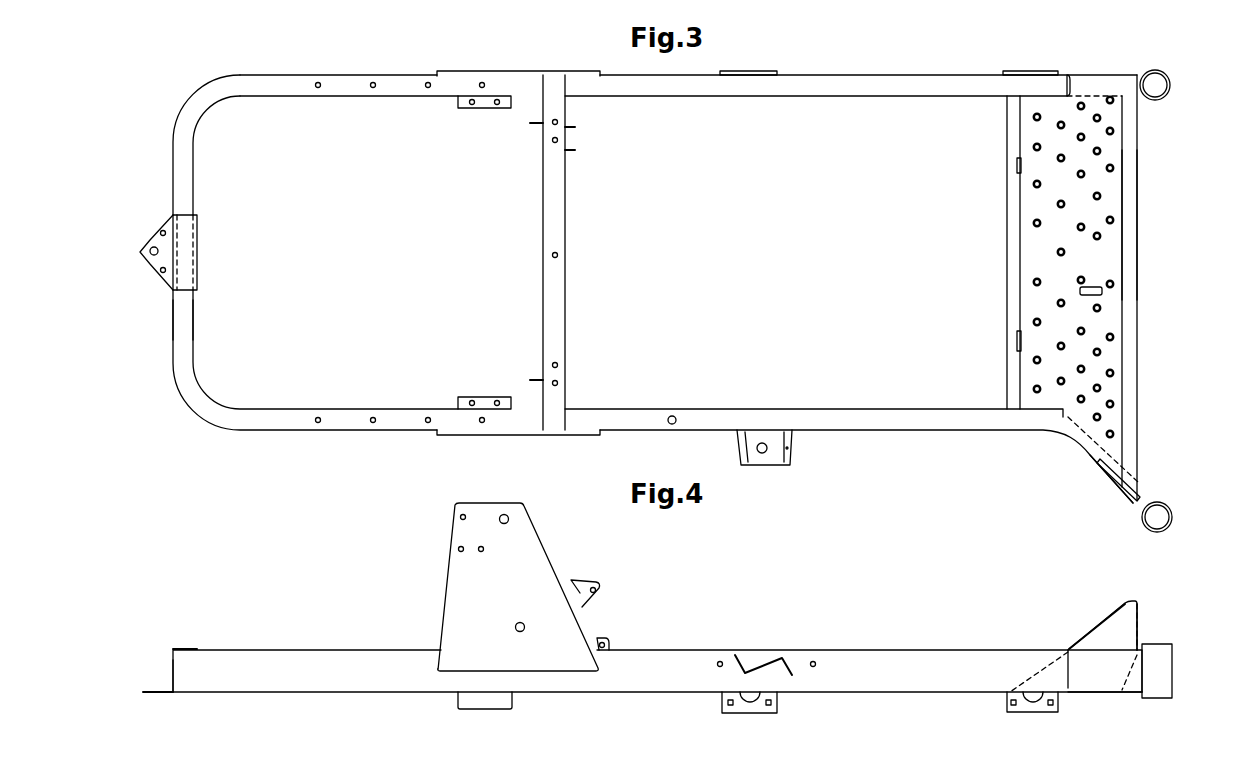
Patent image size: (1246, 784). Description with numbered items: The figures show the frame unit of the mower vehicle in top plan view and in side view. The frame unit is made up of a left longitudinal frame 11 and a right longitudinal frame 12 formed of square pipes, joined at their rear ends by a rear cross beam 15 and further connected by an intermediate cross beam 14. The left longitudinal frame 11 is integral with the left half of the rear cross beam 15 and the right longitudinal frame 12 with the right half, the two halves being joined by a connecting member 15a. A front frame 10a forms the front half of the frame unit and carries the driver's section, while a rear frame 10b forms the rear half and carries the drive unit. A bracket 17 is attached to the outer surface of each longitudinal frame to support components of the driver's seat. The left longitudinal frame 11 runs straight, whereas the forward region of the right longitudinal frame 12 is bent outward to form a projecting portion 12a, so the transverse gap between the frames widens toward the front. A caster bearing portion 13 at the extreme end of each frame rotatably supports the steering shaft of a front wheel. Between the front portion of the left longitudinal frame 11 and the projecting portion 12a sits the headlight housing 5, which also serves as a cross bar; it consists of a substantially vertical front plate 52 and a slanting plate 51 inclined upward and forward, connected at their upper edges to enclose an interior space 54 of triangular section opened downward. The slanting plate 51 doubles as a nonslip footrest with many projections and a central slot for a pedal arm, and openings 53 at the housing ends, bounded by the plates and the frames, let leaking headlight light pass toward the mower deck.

In FIG. 3, the headlight housing 5 is at (1142, 318).
In FIG. 4, the headlight housing 5 is at (1124, 600).
In FIG. 3, the front frame 10a is at (921, 72).
In FIG. 4, the front frame 10a is at (870, 648).
In FIG. 3, the rear frame 10b is at (275, 72).
In FIG. 4, the rear frame 10b is at (307, 648).
In FIG. 3, the left longitudinal frame 11 is at (347, 88).
In FIG. 3, the right longitudinal frame 12 is at (903, 410).
In FIG. 4, the right longitudinal frame 12 is at (665, 660).
In FIG. 3, the projecting portion 12a is at (1138, 492).
In FIG. 4, the projecting portion 12a is at (1108, 678).
In FIG. 3, the caster bearing portion 13 is at (1171, 88).
In FIG. 4, the caster bearing portion 13 is at (1172, 655).
In FIG. 3, the intermediate cross beam 14 is at (550, 292).
In FIG. 3, the rear cross beam 15 is at (190, 326).
In FIG. 4, the rear cross beam 15 is at (184, 680).
In FIG. 3, the connecting member 15a is at (195, 252).
In FIG. 4, the connecting member 15a is at (187, 648).
In FIG. 3, the bracket 17 is at (498, 70).
In FIG. 4, the bracket 17 is at (545, 543).
In FIG. 3, the slanting plate 51 is at (1035, 253).
In FIG. 4, the slanting plate 51 is at (1090, 628).
In FIG. 3, the front plate 52 is at (1140, 248).
In FIG. 4, the front plate 52 is at (1140, 628).
In FIG. 3, the openings 53 is at (1087, 72).
In FIG. 4, the openings 53 is at (1090, 653).
In FIG. 4, the interior space 54 is at (1115, 620).